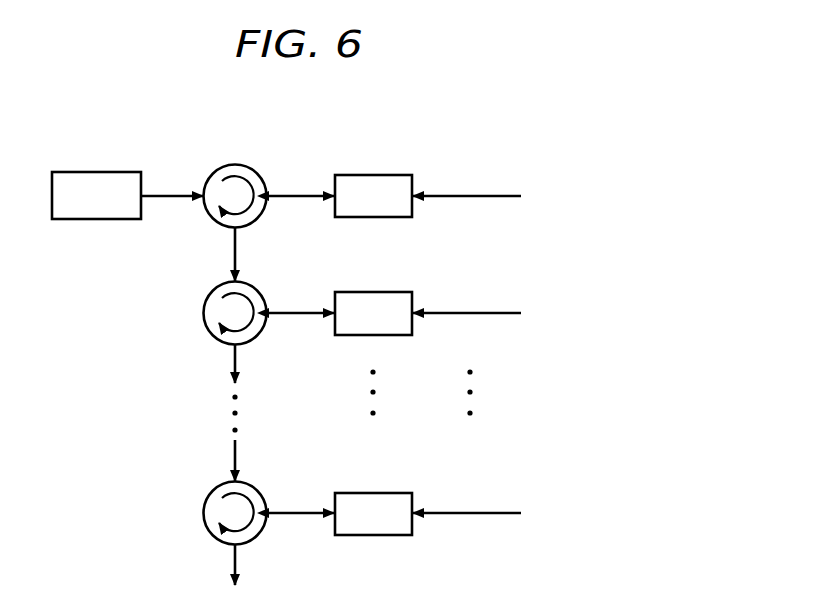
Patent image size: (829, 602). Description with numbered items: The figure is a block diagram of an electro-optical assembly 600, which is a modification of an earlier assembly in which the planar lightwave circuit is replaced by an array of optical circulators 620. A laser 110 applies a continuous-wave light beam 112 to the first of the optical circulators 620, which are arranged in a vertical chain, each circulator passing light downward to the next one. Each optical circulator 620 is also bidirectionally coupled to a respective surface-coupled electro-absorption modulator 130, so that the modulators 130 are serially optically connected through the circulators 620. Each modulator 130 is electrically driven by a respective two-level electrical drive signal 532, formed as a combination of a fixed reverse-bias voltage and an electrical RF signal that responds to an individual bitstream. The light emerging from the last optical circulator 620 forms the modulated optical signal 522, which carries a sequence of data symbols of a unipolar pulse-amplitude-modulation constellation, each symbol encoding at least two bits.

The electro-optical assembly 600 is at (312, 98).
The laser 110 is at (100, 172).
The continuous-wave light beam 112 is at (165, 199).
The optical circulators 620 is at (177, 514).
The surface-coupled electro-absorption modulators (SCEAMs) 130 is at (374, 492).
The electrical drive signals 532 is at (474, 510).
The modulated optical signal 522 is at (233, 557).